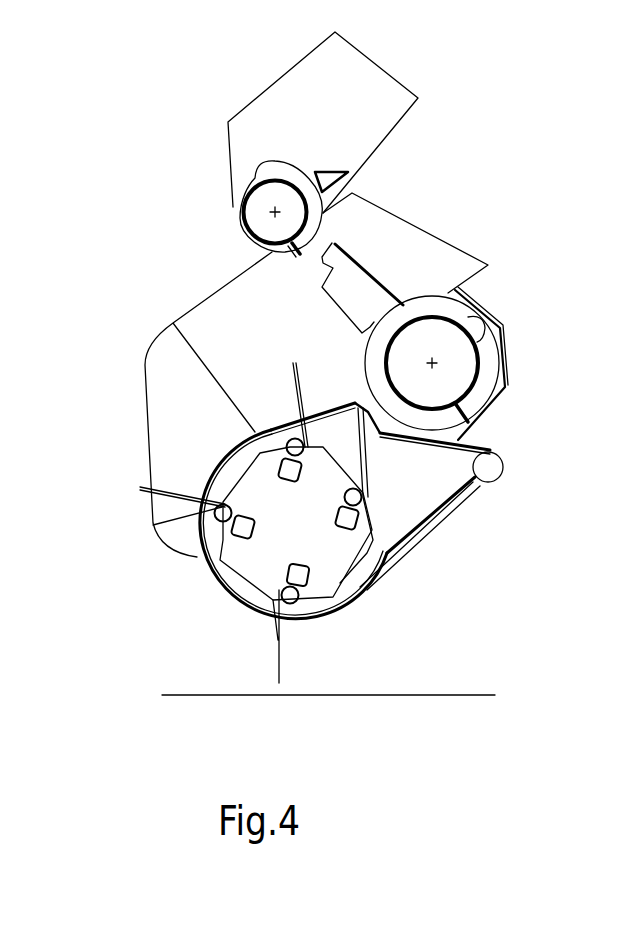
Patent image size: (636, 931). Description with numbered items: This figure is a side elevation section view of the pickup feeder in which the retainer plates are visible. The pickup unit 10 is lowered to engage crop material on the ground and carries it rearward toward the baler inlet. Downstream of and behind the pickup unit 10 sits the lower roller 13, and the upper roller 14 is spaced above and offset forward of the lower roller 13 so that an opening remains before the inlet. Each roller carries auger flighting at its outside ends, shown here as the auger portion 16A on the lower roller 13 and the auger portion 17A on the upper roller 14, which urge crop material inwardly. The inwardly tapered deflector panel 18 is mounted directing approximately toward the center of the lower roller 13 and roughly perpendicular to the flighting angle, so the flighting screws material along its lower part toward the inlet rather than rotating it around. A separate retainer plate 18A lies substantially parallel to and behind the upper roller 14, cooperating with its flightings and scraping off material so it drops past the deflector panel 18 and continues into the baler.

The pickup unit 10 is at (197, 555).
The lower roller 13 is at (458, 370).
The upper roller 14 is at (252, 212).
The auger portion 16A is at (467, 318).
The auger portion 17A is at (312, 228).
The deflector panel 18 is at (340, 287).
The retainer plate 18A is at (325, 177).